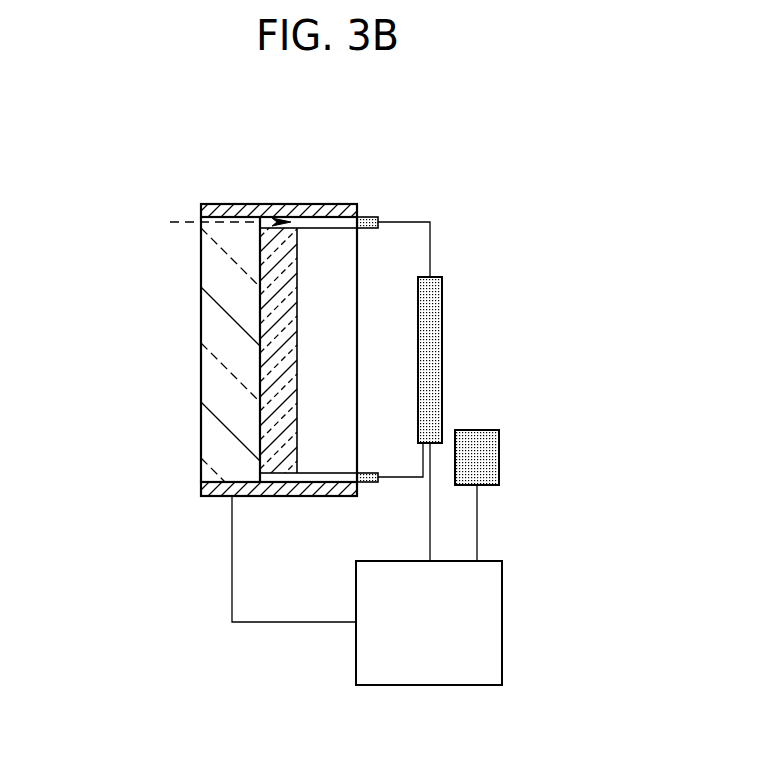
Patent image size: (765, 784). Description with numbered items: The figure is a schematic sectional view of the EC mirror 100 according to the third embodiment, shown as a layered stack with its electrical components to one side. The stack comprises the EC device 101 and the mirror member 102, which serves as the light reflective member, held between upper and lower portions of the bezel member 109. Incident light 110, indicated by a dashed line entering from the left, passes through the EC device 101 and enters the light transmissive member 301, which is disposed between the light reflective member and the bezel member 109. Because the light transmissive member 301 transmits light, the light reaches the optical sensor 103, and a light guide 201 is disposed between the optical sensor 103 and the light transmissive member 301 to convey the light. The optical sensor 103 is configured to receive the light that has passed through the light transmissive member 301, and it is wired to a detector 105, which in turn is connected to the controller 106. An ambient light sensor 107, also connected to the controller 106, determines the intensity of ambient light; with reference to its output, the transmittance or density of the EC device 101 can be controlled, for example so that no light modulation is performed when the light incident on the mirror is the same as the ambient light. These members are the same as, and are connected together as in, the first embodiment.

The EC mirror 100 is at (478, 106).
The EC device 101 is at (225, 366).
The mirror member 102 is at (270, 425).
The optical sensor 103 is at (372, 475).
The detector 105 is at (442, 298).
The controller 106 is at (502, 610).
The ambient light sensor 107 is at (477, 438).
The bezel member 109 is at (233, 207).
The incident light 110 is at (170, 222).
The light guide 201 is at (320, 477).
The light transmissive member 301 is at (283, 219).